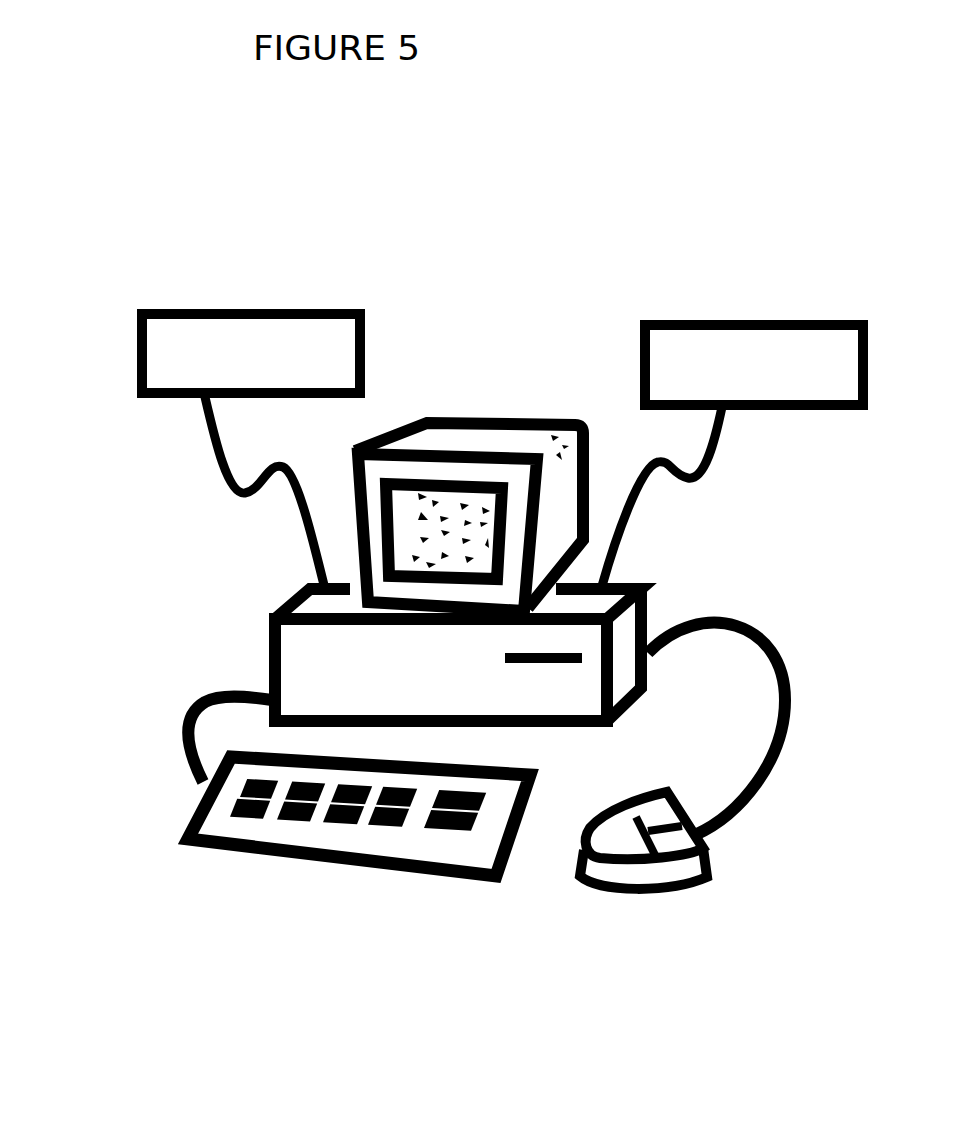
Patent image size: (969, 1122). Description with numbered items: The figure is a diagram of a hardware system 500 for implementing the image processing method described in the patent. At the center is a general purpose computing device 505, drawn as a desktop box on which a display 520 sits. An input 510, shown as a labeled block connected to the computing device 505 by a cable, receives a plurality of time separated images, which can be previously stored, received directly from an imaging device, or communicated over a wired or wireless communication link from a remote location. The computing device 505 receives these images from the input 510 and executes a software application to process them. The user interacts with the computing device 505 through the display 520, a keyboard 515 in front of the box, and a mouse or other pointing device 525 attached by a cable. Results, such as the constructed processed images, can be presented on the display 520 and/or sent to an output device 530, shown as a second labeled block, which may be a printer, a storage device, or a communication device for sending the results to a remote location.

The computer system 500 is at (330, 937).
The general purpose computing device 505 is at (292, 650).
The input 510 is at (163, 338).
The keyboard 515 is at (220, 823).
The display 520 is at (478, 430).
The mouse or other pointing device 525 is at (662, 873).
The output device 530 is at (688, 337).